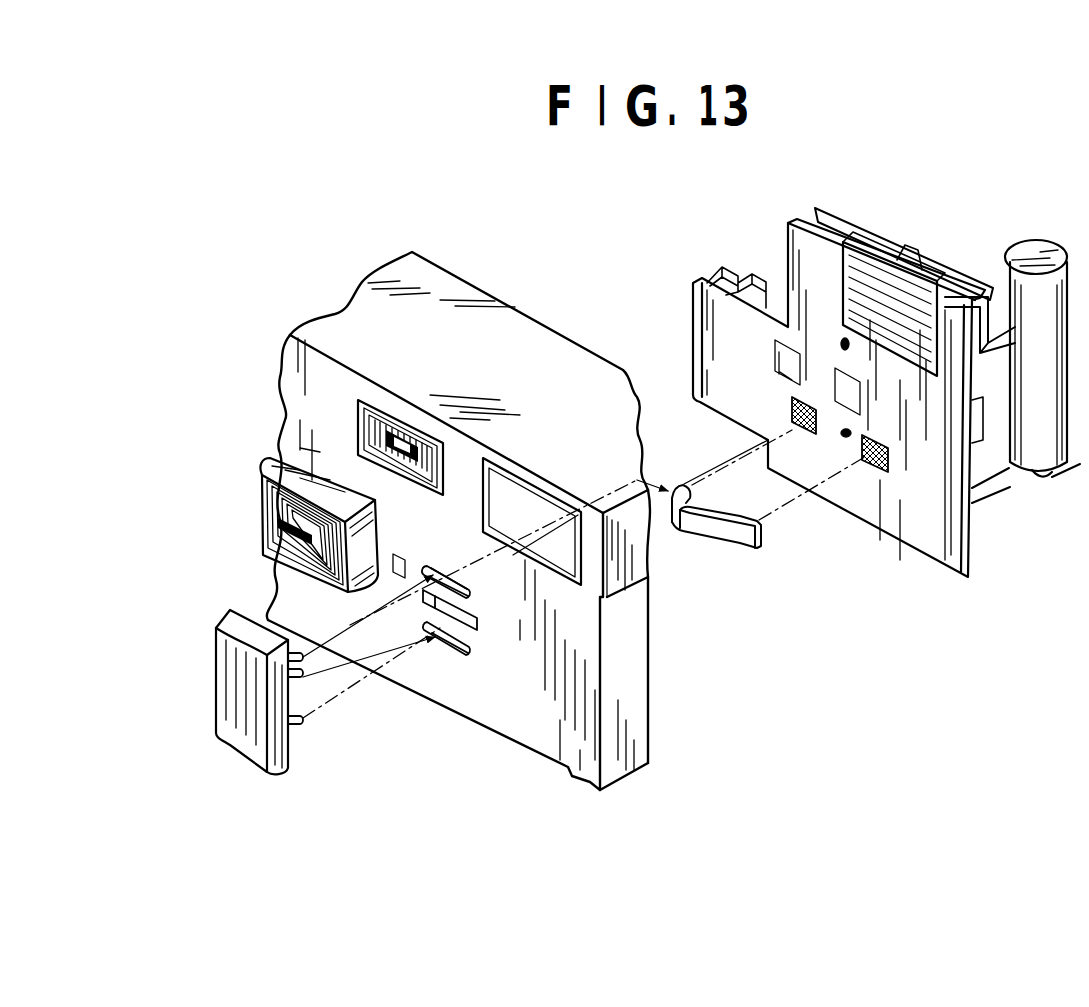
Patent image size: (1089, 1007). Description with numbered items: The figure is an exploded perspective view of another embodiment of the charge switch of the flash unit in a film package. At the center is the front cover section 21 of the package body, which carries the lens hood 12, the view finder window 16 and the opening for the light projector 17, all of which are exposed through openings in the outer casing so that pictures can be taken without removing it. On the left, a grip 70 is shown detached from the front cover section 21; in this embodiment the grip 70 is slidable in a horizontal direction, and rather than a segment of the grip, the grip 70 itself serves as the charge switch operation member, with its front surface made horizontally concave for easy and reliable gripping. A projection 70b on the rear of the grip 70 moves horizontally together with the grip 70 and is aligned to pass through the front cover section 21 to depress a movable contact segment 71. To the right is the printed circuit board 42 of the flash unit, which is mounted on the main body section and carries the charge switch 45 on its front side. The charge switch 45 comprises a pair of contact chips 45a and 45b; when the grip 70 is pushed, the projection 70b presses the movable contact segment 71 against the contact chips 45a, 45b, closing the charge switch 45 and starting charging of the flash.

The front cover section 21 is at (493, 330).
The view finder window 16 is at (398, 432).
The light projector 17 is at (535, 485).
The lens hood 12 is at (272, 460).
The grip 70 is at (248, 752).
The projection 70b is at (305, 690).
The movable contact segment 71 is at (714, 532).
The printed circuit board 42 is at (978, 550).
The charge switch 45 is at (813, 521).
The contact chip 45a is at (805, 437).
The contact chip 45b is at (875, 475).